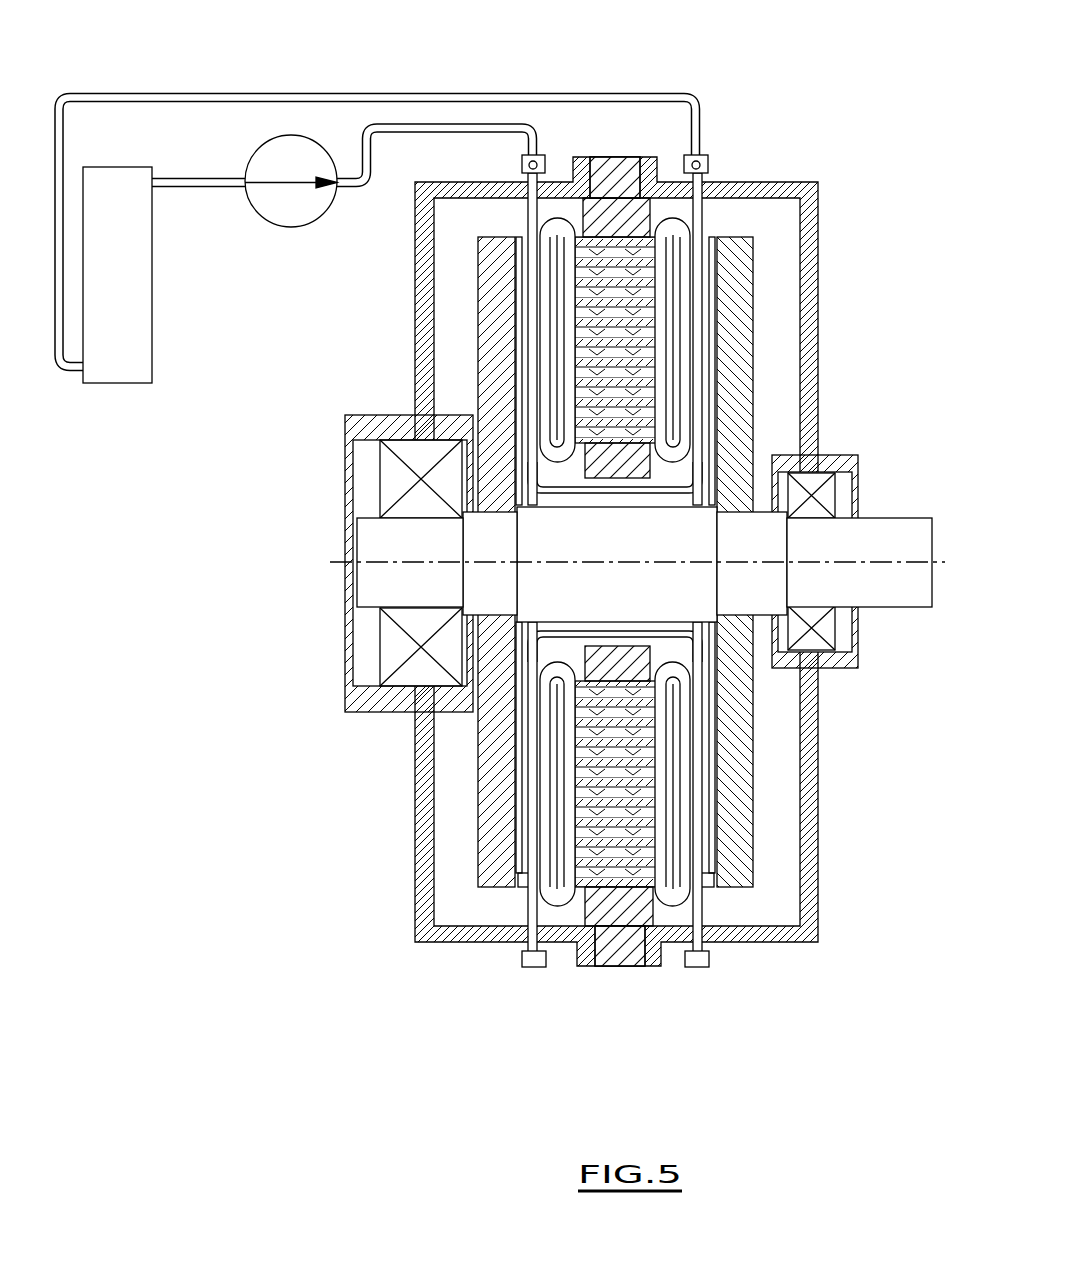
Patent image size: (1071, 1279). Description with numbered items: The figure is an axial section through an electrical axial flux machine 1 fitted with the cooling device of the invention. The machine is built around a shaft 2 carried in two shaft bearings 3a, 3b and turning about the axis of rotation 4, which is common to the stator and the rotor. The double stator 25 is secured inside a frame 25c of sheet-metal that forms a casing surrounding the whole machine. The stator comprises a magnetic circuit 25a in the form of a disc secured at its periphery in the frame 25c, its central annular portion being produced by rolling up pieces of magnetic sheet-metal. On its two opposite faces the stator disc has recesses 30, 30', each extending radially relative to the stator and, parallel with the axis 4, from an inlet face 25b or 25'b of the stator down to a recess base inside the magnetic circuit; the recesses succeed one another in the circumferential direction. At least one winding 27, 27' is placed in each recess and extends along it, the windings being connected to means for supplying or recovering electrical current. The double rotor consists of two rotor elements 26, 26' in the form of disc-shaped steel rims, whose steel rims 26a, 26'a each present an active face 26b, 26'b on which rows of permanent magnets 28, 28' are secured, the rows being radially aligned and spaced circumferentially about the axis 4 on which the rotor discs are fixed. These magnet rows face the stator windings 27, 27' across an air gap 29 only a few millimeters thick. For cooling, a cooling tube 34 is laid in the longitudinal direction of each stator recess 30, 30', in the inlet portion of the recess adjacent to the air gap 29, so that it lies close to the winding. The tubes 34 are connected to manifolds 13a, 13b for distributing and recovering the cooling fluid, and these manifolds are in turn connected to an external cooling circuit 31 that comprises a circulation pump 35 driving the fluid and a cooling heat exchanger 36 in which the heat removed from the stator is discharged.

The electrical machine 1 is at (594, 548).
The shaft 2 is at (350, 539).
The shaft bearing 3a is at (338, 634).
The shaft bearing 3b is at (873, 486).
The axis of rotation 4 is at (907, 563).
The manifold 13a is at (546, 166).
The manifold 13b is at (708, 165).
The double stator 25 is at (653, 596).
The magnetic circuit 25a is at (620, 870).
The inlet face 25b is at (530, 328).
The inlet face 25'b is at (786, 362).
The frame 25c is at (808, 386).
The rotor element 26 is at (443, 399).
The rotor element 26' is at (791, 399).
The steel rim 26a is at (500, 800).
The steel rim 26'a is at (797, 724).
The active face 26b is at (500, 873).
The active face 26'b is at (731, 895).
The winding 27 is at (506, 562).
The winding 27' is at (702, 554).
The permanent magnets 28 is at (485, 747).
The permanent magnets 28' is at (786, 747).
The air gap 29 is at (530, 870).
The recess 30 is at (617, 547).
The recess 30' is at (636, 562).
The cooling circuit 31 is at (312, 74).
The cooling tube 34 is at (697, 420).
The circulation pump 35 is at (279, 212).
The cooling heat exchanger 36 is at (135, 350).